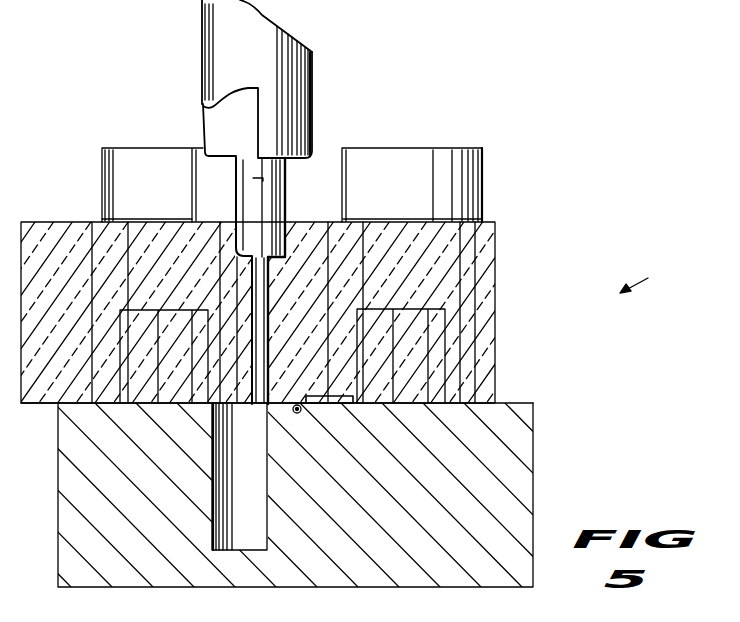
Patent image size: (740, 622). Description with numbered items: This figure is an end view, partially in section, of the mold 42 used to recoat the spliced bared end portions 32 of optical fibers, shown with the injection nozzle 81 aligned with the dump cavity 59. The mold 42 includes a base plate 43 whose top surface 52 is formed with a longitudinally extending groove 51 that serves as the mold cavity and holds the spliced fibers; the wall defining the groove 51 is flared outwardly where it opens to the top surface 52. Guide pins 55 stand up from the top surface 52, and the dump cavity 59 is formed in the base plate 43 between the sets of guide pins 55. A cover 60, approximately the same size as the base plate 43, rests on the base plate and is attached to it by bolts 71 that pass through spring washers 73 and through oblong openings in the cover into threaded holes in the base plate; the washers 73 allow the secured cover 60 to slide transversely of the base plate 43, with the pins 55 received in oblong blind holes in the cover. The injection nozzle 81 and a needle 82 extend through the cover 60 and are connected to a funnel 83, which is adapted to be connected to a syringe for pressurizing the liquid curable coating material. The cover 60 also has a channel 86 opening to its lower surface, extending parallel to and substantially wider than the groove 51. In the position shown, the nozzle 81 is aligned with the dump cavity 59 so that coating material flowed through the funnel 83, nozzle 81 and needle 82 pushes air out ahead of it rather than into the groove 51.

The funnel 83 is at (249, 48).
The injection nozzle 81 is at (272, 393).
The bolts 71 is at (108, 159).
The spring washers 73 is at (175, 218).
The cover 60 is at (492, 277).
The guide pins 55 is at (180, 313).
The top surface 52 is at (503, 402).
The base plate 43 is at (526, 462).
The mold 42 is at (641, 271).
The needle 82 is at (262, 403).
The dump cavity 59 is at (220, 521).
The bared end portions 32 is at (302, 412).
The groove 51 is at (296, 413).
The channel 86 is at (350, 404).